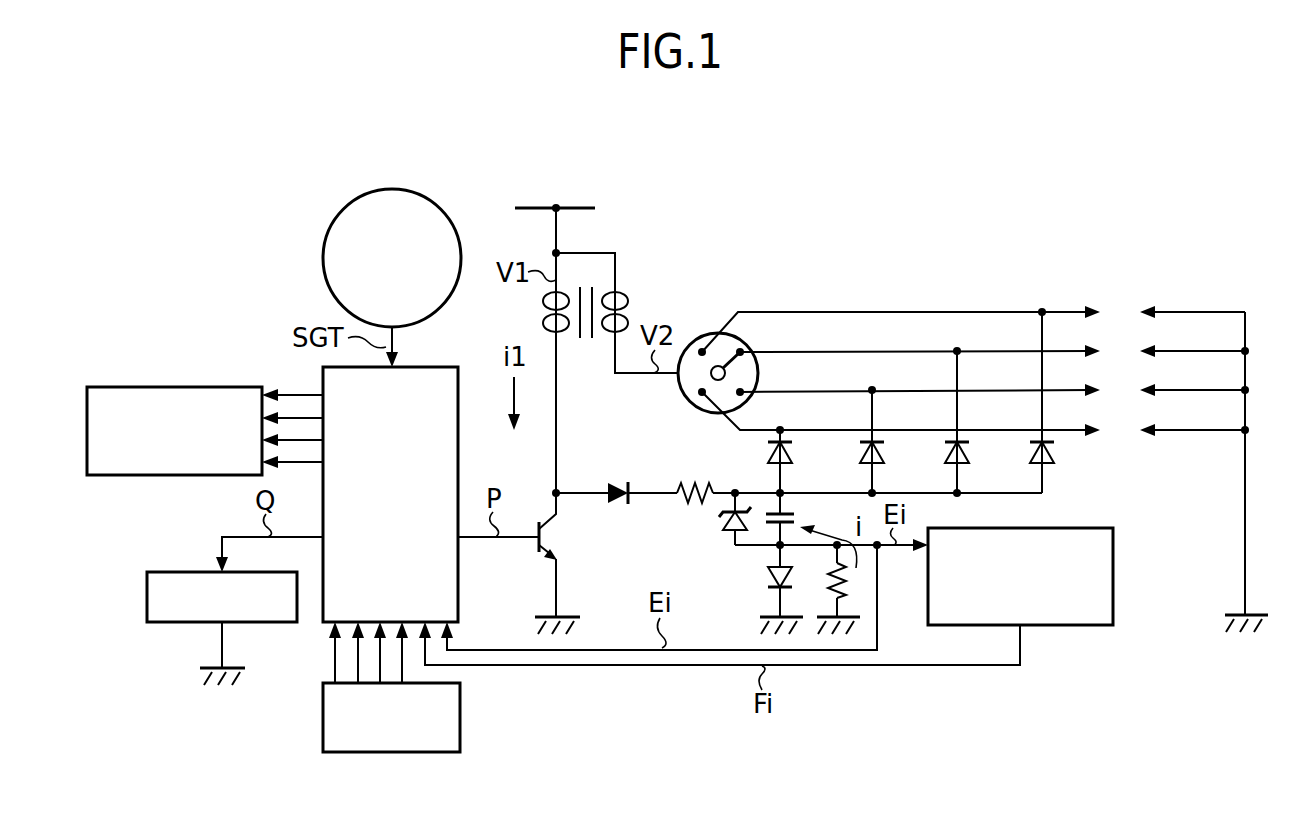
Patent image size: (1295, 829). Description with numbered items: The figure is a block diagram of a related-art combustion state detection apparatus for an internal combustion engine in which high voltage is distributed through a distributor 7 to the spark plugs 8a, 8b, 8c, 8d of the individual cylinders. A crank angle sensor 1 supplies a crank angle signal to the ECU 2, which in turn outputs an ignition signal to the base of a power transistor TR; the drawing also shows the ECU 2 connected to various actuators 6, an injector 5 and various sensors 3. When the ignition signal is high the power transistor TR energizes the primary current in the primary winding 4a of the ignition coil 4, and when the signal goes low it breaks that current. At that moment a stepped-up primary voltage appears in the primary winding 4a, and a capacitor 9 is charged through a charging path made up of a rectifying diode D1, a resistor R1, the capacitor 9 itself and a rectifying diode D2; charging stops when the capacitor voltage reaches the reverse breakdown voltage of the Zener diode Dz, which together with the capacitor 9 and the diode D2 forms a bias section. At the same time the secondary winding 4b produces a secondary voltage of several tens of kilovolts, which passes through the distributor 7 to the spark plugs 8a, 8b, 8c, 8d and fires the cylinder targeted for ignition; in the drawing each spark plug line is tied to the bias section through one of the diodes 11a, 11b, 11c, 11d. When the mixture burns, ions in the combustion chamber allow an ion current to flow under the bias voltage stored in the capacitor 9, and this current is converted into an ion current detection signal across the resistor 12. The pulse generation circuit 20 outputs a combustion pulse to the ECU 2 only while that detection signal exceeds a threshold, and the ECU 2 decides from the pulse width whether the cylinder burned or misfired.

The crank angle sensor 1 is at (331, 226).
The ECU 2 is at (323, 388).
The various sensors 3 is at (460, 712).
The ignition coil 4 is at (572, 252).
The primary winding 4a is at (543, 318).
The secondary winding 4b is at (620, 300).
The injector 5 is at (164, 572).
The various actuators 6 is at (176, 387).
The distributor 7 is at (702, 350).
The spark plug 8a is at (1120, 434).
The spark plug 8b is at (1118, 386).
The spark plug 8c is at (1118, 346).
The spark plug 8d is at (1118, 308).
The capacitor 9 is at (798, 517).
The diode 11a is at (770, 456).
The diode 11b is at (864, 452).
The diode 11c is at (950, 452).
The diode 11d is at (1036, 452).
The resistor 12 is at (848, 592).
The pulse generation circuit 20 is at (1113, 570).
The power transistor TR is at (558, 538).
The rectifying diode D1 is at (616, 482).
The resistor R1 is at (686, 482).
The Zener diode Dz is at (724, 526).
The rectifying diode D2 is at (768, 578).